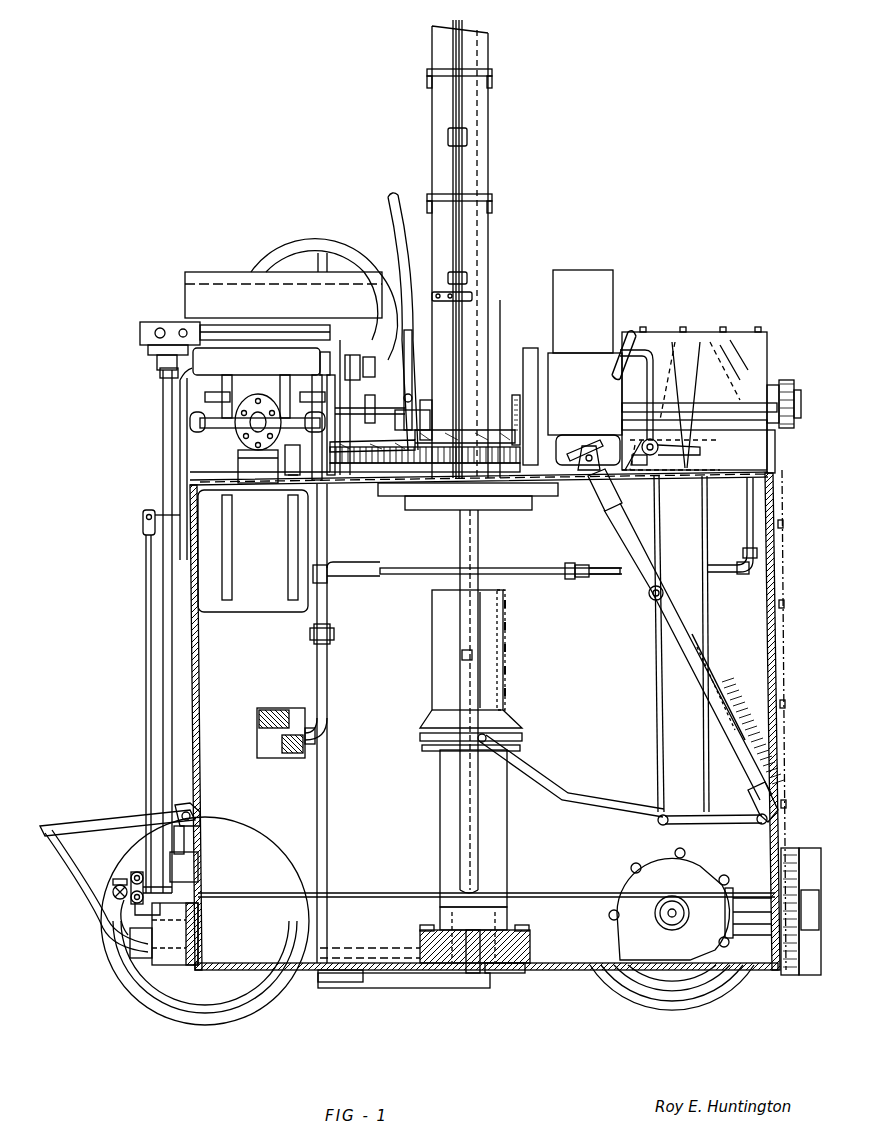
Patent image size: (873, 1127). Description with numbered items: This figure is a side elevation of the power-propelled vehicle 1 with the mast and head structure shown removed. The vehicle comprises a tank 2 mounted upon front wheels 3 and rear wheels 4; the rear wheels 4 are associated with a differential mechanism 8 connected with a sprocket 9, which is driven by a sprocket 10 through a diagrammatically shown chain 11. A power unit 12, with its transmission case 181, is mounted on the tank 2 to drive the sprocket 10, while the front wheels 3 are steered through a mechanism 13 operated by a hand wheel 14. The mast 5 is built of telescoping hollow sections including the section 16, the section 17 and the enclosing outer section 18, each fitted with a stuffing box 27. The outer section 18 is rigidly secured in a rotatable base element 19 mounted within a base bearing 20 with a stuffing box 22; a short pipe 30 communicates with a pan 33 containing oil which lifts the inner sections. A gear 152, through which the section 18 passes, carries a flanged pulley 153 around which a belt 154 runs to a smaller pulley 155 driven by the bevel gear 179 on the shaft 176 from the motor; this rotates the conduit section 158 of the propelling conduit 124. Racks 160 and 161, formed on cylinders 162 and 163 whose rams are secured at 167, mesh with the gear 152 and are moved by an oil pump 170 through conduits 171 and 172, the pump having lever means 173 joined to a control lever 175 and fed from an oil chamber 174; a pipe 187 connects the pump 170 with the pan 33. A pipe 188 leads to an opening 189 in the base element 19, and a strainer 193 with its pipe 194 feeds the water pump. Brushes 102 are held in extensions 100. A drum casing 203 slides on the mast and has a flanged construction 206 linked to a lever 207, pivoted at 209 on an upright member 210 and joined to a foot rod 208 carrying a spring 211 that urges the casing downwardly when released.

The power-propelled vehicle 1 is at (128, 616).
The tank 2 is at (191, 663).
The wheels 3 is at (198, 1030).
The wheels 4 is at (696, 1010).
The mast 5 is at (469, 249).
The differential mechanism 8 is at (618, 912).
The sprocket 9 is at (794, 975).
The sprocket 10 is at (780, 380).
The chain 11 is at (782, 503).
The power unit 12 is at (585, 367).
The steering mechanism 13 is at (113, 899).
The hand wheel 14 is at (318, 253).
The mast section 16 is at (434, 46).
The mast section 17 is at (488, 134).
The outer mast section 18 is at (490, 295).
The rotatable base element 19 is at (530, 937).
The base bearing 20 is at (516, 965).
The stuffing box 22 is at (525, 925).
The stuffing box 27 is at (492, 72).
The short pipe 30 is at (470, 975).
The pan 33 is at (400, 990).
The extensions 100 is at (348, 370).
The brushes 102 is at (626, 342).
The propelling conduit 124 is at (474, 247).
The gear 152 is at (444, 481).
The flanged pulley 153 is at (443, 432).
The belt 154 is at (496, 415).
The smaller pulley 155 is at (338, 460).
The conduit section 158 is at (480, 543).
The rack 160 is at (748, 481).
The rack 161 is at (448, 485).
The cylinder 162 is at (618, 446).
The cylinder 163 is at (560, 440).
The ram securing point 167 is at (772, 443).
The oil pump 170 is at (236, 410).
The conduit 171 is at (378, 572).
The conduit 172 is at (538, 575).
The lever means 173 is at (410, 392).
The oil chamber 174 is at (253, 584).
The control lever 175 is at (400, 238).
The shaft 176 is at (370, 392).
The bevel gear 179 is at (378, 358).
The transmission case 181 is at (703, 332).
The pipe 187 is at (328, 609).
The pipe 188 is at (376, 958).
The opening 189 is at (466, 963).
The strainer 193 is at (263, 733).
The pipe 194 is at (330, 729).
The drum casing 203 is at (432, 672).
The flanged construction 206 is at (522, 738).
The lever 207 is at (573, 803).
The foot rod 208 is at (678, 651).
The pivot 209 is at (666, 811).
The upright member 210 is at (666, 719).
The spring 211 is at (728, 702).